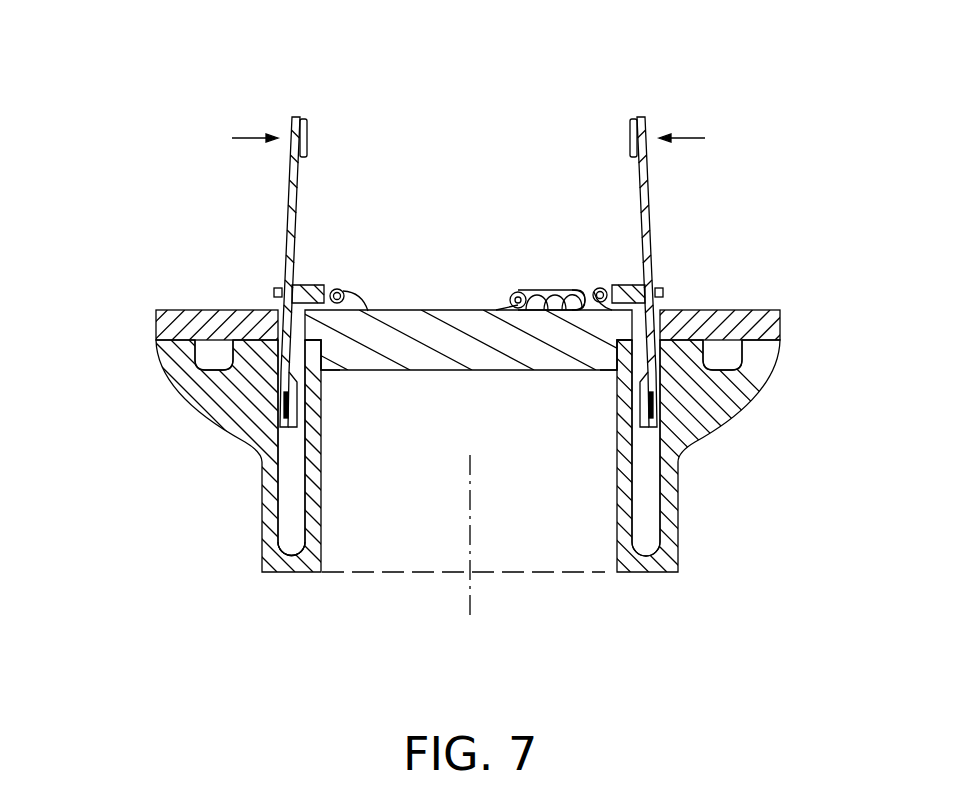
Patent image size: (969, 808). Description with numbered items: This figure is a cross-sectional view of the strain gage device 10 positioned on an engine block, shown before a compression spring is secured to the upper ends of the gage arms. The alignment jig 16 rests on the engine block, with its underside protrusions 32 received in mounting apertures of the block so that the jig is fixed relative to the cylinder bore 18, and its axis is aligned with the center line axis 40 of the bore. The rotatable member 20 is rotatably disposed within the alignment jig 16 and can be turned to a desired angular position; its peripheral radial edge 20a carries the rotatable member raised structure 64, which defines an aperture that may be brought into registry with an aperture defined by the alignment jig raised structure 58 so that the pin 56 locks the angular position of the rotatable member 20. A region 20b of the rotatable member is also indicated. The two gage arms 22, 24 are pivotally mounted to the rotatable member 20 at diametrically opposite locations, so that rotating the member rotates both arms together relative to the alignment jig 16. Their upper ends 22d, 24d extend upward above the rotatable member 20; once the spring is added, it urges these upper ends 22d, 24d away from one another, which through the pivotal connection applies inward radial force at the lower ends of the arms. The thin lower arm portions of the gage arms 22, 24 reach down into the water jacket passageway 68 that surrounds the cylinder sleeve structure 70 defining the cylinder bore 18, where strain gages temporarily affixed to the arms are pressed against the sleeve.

The strain gage device 10 is at (165, 383).
The alignment jig 16 is at (773, 312).
The cylinder bore 18 is at (530, 450).
The rotatable member 20 is at (399, 318).
The peripheral radial edge 20a is at (606, 372).
The plate end 20b is at (431, 370).
The gage arm 22 is at (287, 207).
The upper end 22d is at (296, 116).
The gage arm 24 is at (649, 176).
The upper end 24d is at (641, 116).
The underside protrusion 32 is at (213, 368).
The center line axis 40 is at (472, 603).
The pin 56 is at (573, 288).
The alignment jig raised structure 58 is at (555, 288).
The rotatable member raised structure 64 is at (535, 288).
The water jacket passageway 68 is at (290, 533).
The cylinder sleeve structure 70 is at (318, 526).